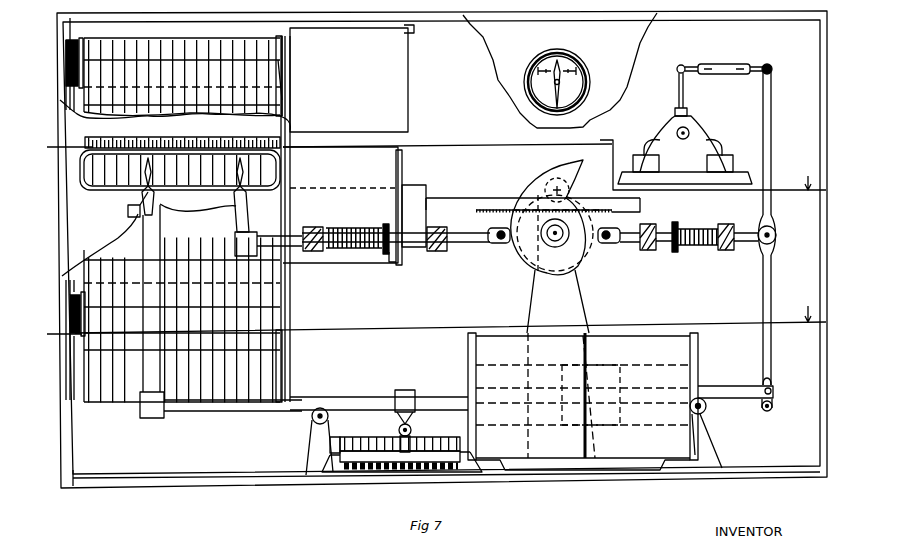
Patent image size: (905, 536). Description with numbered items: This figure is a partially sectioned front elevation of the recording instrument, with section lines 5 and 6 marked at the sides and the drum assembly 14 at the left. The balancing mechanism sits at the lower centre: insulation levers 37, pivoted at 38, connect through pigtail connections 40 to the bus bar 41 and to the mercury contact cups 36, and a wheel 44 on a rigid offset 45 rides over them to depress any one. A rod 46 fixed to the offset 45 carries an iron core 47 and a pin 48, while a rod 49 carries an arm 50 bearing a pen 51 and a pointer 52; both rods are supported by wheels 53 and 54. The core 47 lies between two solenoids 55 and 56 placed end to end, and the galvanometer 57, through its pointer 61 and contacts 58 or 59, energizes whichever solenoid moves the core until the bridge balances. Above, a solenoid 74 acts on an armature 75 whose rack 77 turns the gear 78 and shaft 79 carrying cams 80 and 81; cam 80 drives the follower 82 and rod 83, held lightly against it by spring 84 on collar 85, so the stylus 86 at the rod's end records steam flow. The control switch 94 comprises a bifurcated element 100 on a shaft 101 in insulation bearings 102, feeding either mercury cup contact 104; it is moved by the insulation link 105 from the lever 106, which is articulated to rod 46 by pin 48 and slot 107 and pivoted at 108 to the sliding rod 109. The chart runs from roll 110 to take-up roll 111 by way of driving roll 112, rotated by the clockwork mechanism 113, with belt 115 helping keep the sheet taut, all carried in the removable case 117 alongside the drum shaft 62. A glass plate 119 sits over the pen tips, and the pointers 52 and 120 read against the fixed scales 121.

The section line 5- 5 is at (436, 168).
The section line 6- 6 is at (436, 324).
The chart drum 14 is at (66, 47).
The friction belt 115 is at (70, 22).
The driving roll 112 is at (281, 43).
The drum shaft 62 is at (283, 88).
The clockwork mechanism 113 is at (408, 85).
The fixed scales 121 is at (170, 137).
The glass plate 119 is at (281, 158).
The pointer 120 is at (283, 190).
The pointer 52 is at (140, 188).
The pen 51 is at (128, 209).
The stylus 86 is at (255, 230).
The solenoid 74 is at (403, 156).
The armature 75 is at (420, 182).
The spring 84 is at (359, 230).
The rod 83 is at (399, 253).
The collar 85 is at (389, 255).
The rack 77 is at (505, 207).
The cam 80 is at (547, 173).
The gear 78 is at (566, 262).
The shaft 79 is at (533, 268).
The follower 82 is at (500, 245).
The cam 81 is at (604, 246).
The sliding rod 109 is at (666, 250).
The pivot 108 is at (778, 234).
The lever 106 is at (771, 175).
The insulation link 105 is at (735, 50).
The control switch 94 is at (685, 150).
The bifurcated element 100 is at (694, 126).
The shaft 101 is at (668, 130).
The insulation bearings 102 is at (716, 135).
The mercury cup contacts 104 is at (731, 158).
The galvanometer 57 is at (540, 57).
The pointer 61 is at (560, 65).
The contact 58 is at (540, 81).
The contact 59 is at (571, 81).
The roll 110 is at (286, 290).
The removable case 117 is at (286, 330).
The take up roll 111 is at (286, 362).
The solenoid 55 is at (512, 325).
The solenoid 56 is at (650, 322).
The iron core 47 is at (611, 400).
The rod 49 is at (359, 395).
The rigid offset 45 is at (411, 390).
The rod 46 is at (454, 397).
The wheel 44 is at (398, 432).
The pivot 38 is at (336, 438).
The insulation levers 37 is at (448, 430).
The mercury contact cups 36 is at (360, 481).
The arm 50 is at (140, 410).
The wheel 53 is at (306, 416).
The wheel 54 is at (708, 406).
The pin 48 is at (772, 391).
The slot 107 is at (773, 407).
The pigtail connections 40 is at (391, 6).
The bus bar 41 is at (433, 6).